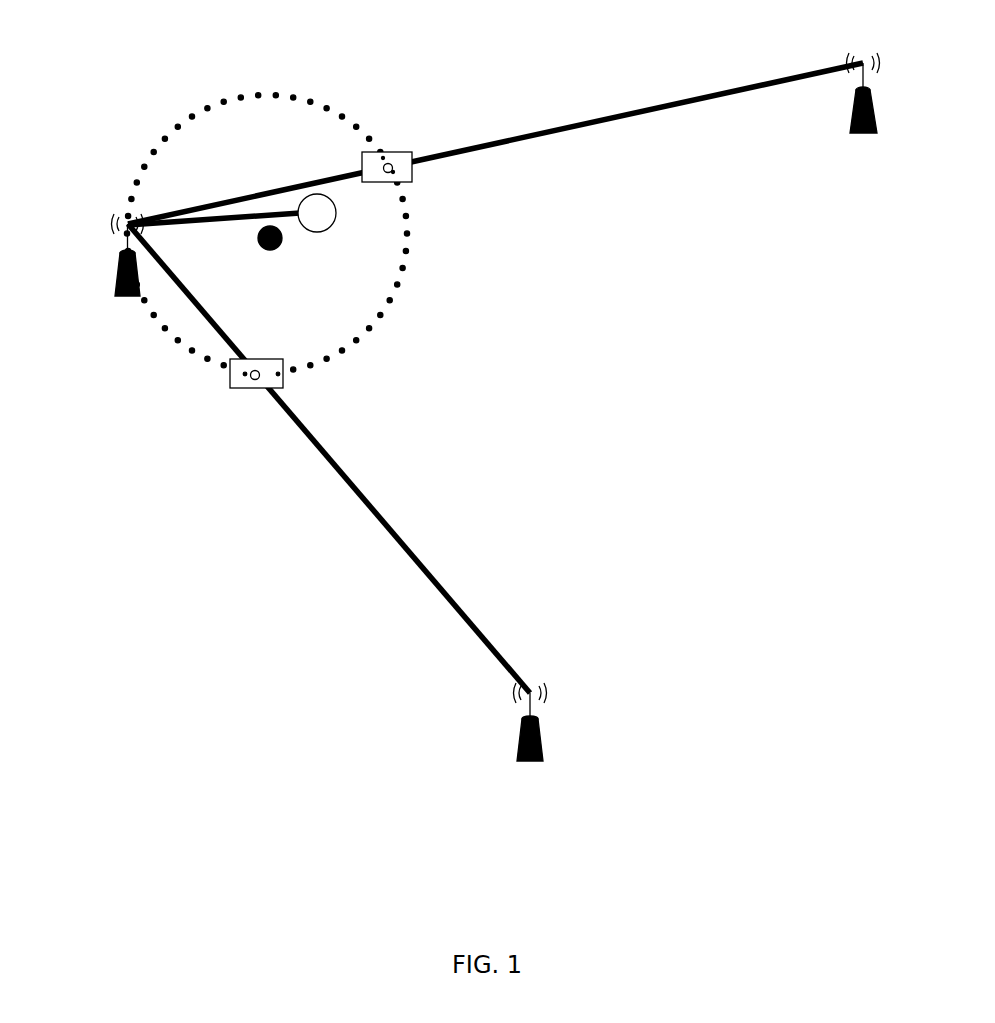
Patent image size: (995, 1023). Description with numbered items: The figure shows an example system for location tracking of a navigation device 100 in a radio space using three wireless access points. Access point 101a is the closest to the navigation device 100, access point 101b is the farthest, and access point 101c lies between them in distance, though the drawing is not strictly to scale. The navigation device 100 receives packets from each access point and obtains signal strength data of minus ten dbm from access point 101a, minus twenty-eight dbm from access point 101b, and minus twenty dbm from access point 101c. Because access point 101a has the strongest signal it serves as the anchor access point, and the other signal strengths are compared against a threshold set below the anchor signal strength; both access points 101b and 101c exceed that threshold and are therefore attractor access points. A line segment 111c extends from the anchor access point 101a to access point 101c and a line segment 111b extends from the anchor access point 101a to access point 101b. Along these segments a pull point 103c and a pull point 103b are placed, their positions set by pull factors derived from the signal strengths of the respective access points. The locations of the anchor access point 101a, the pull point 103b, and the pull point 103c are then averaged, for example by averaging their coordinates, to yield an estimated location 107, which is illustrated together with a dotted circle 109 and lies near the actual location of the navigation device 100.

The navigation device 100 is at (323, 232).
The access point 101a is at (118, 256).
The access point 101b is at (521, 720).
The access point 101c is at (862, 135).
The pull point 103b is at (266, 358).
The pull point 103c is at (386, 150).
The estimated location 107 is at (277, 250).
The dotted circle 109 is at (246, 92).
The line segment 111b is at (400, 546).
The line segment 111c is at (584, 121).